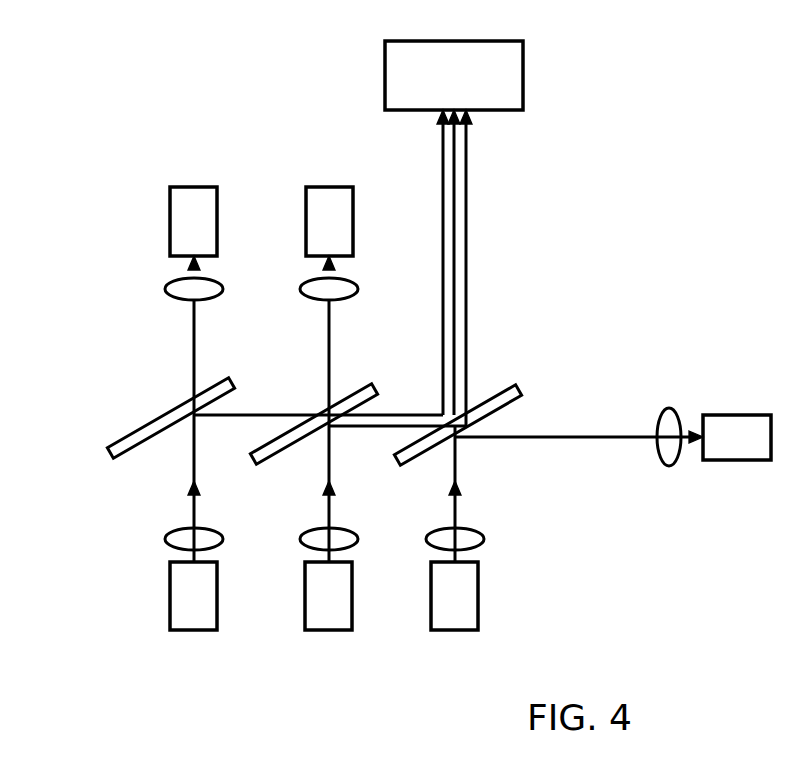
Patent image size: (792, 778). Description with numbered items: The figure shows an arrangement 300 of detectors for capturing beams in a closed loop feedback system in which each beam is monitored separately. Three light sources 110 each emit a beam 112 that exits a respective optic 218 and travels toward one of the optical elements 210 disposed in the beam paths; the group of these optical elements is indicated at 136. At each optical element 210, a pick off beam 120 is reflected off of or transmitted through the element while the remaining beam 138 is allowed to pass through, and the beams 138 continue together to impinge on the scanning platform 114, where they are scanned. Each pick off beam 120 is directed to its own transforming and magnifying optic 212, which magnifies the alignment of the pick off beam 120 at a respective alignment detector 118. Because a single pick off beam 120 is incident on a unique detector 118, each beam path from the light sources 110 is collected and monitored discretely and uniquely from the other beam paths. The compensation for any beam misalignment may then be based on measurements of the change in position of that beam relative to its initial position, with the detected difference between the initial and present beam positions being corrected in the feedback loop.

The light source 110 is at (194, 630).
The beam 112 is at (194, 470).
The scanning platform 114 is at (523, 56).
The alignment detector 118 is at (194, 186).
The pick off beam 120 is at (194, 338).
The beam combiner assembly 136 is at (146, 364).
The beam 138 is at (467, 210).
The optical element 210 is at (231, 382).
The transforming and magnifying optic 212 is at (165, 291).
The optics 218 is at (220, 534).
The arrangement 300 is at (690, 110).